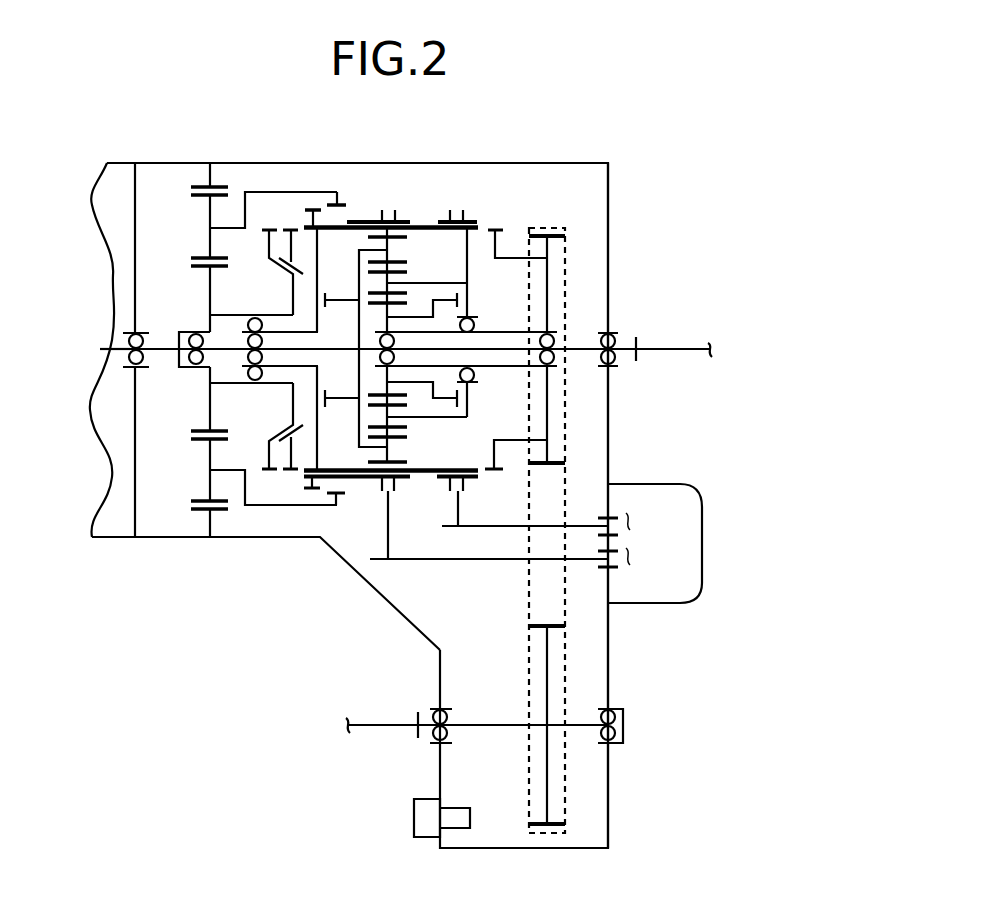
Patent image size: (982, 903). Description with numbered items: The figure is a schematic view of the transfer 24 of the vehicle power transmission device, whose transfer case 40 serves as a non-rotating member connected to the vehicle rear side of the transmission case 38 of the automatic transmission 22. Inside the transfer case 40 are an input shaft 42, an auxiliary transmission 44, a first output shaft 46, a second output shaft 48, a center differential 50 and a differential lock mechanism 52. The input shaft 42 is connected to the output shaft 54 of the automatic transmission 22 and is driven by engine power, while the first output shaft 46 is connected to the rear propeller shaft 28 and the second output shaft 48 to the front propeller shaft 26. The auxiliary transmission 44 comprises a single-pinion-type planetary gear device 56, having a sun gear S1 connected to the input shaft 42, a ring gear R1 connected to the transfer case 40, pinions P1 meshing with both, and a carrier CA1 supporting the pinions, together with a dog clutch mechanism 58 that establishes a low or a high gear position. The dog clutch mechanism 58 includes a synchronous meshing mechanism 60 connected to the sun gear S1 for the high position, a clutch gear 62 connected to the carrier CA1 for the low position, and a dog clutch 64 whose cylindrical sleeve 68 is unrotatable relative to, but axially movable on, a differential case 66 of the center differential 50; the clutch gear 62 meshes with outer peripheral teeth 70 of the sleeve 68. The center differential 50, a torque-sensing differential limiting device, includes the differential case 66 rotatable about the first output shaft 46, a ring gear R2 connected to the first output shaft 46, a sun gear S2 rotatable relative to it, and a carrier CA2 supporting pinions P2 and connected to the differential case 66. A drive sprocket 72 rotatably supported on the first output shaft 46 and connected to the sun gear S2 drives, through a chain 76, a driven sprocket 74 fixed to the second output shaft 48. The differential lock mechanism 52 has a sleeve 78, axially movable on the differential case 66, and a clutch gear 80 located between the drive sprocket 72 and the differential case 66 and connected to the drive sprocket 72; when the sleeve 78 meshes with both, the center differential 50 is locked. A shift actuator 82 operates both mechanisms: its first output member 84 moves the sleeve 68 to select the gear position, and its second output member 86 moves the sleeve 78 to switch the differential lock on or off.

The automatic transmission 22 is at (85, 242).
The transfer 24 is at (667, 194).
The front propeller shaft 26 is at (390, 727).
The rear propeller shaft 28 is at (657, 347).
The transmission case 38 is at (122, 163).
The transfer case 40 is at (547, 162).
The input shaft 42 is at (158, 352).
The auxiliary transmission 44 is at (235, 546).
The first output shaft 46 is at (582, 347).
The second output shaft 48 is at (483, 727).
The center differential 50 is at (357, 487).
The differential lock mechanism 52 is at (485, 487).
The output shaft 54 is at (113, 352).
The planetary gear device 56 is at (190, 466).
The dog clutch mechanism 58 is at (287, 515).
The synchronous meshing mechanism 60 is at (276, 218).
The clutch gear 62 is at (340, 204).
The dog clutch 64 is at (320, 196).
The differential case 66 is at (422, 226).
The sleeve 68 is at (350, 221).
The outer peripheral teeth 70 is at (309, 208).
The drive sprocket 72 is at (566, 248).
The driven sprocket 74 is at (560, 822).
The chain 76 is at (568, 478).
The sleeve 78 is at (465, 222).
The clutch gear 80 is at (498, 243).
The shift actuator 82 is at (650, 604).
The first output member 84 is at (393, 568).
The second output member 86 is at (463, 535).
The ring gear R1 is at (197, 187).
The pinions P1 is at (197, 256).
The sun gear S1 is at (197, 268).
The carrier CA1 is at (290, 193).
The ring gear R2 is at (378, 242).
The pinions P2 is at (400, 272).
The sun gear S2 is at (380, 308).
The carrier CA2 is at (467, 256).